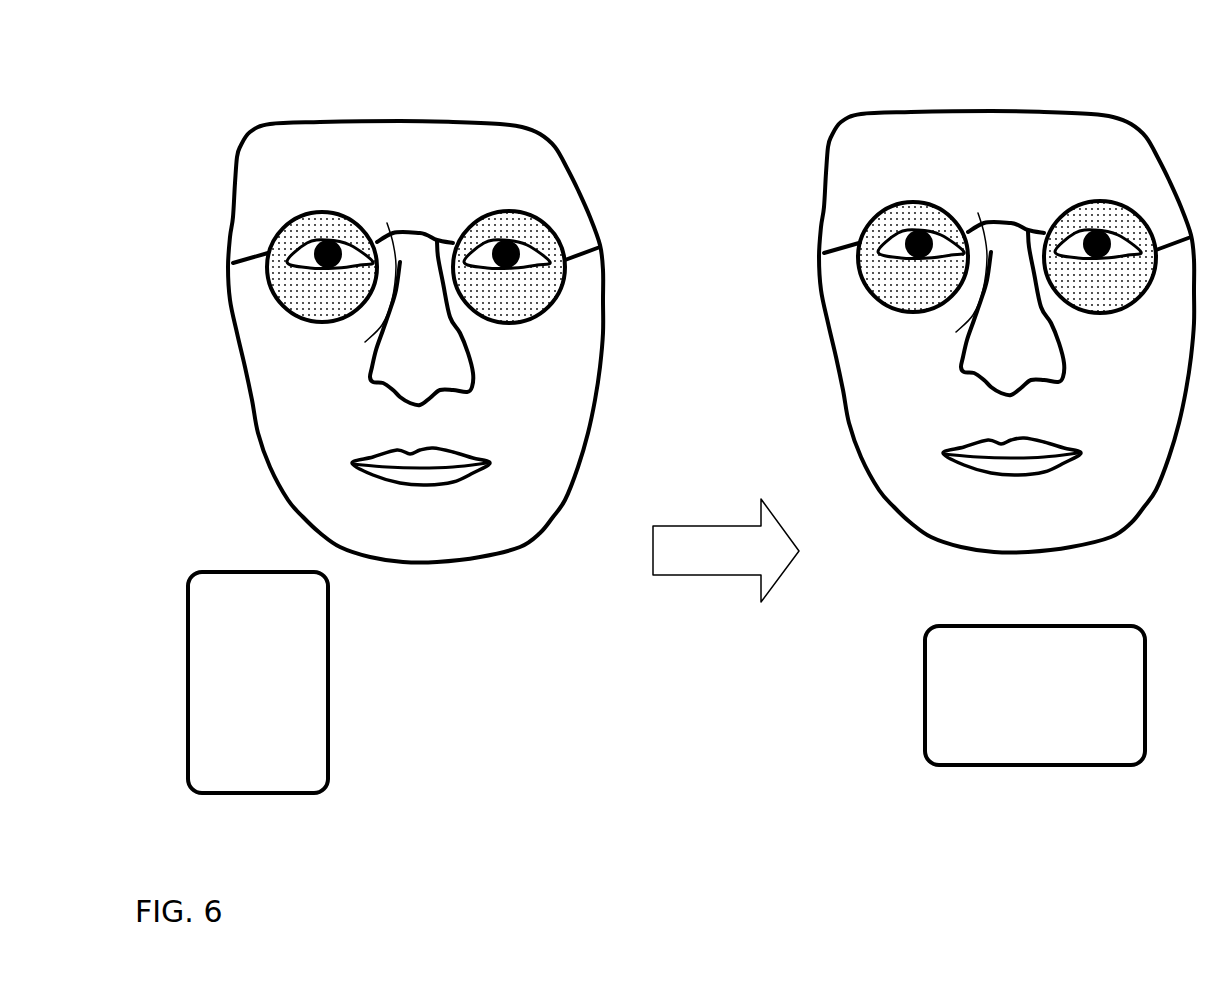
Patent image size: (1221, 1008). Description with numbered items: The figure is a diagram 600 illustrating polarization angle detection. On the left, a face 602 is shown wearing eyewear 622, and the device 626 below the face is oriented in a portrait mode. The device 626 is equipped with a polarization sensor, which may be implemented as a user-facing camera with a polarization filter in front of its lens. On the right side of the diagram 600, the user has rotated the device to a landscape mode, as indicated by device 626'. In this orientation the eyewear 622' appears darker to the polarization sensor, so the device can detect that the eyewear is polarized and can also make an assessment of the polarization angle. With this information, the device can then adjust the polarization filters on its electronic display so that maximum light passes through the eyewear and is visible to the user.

The diagram 600 is at (1040, 49).
The face 602 is at (380, 143).
The eyewear 622 is at (317, 290).
The eyewear 622' is at (905, 282).
The device 626 is at (245, 657).
The device 626' is at (1035, 672).